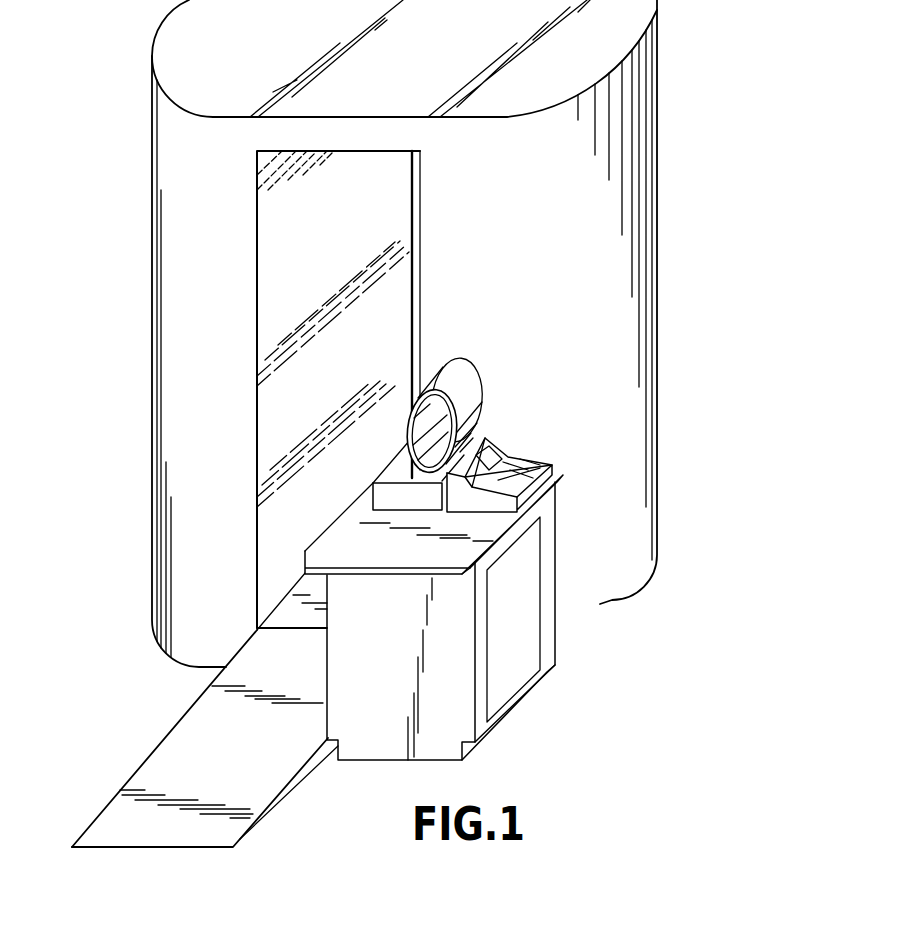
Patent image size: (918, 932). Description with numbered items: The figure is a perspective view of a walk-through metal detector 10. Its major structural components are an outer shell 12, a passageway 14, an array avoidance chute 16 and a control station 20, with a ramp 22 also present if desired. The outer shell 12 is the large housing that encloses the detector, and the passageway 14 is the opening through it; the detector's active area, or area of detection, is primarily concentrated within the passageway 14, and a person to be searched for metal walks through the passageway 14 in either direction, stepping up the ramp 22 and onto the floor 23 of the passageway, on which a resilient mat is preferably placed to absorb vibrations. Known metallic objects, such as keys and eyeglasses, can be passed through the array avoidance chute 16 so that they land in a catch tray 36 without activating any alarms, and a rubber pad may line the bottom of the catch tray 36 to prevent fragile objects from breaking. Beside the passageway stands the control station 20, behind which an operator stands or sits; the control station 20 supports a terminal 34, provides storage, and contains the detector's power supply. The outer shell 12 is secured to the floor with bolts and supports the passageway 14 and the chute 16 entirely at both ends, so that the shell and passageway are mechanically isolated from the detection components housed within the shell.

The walk-through metal detector 10 is at (120, 233).
The outer shell 12 is at (152, 160).
The passageway 14 is at (257, 276).
The array avoidance chute 16 is at (485, 400).
The control station 20 is at (533, 712).
The ramp 22 is at (317, 758).
The floor 23 is at (293, 611).
The terminal 34 is at (548, 458).
The catch tray 36 is at (376, 479).